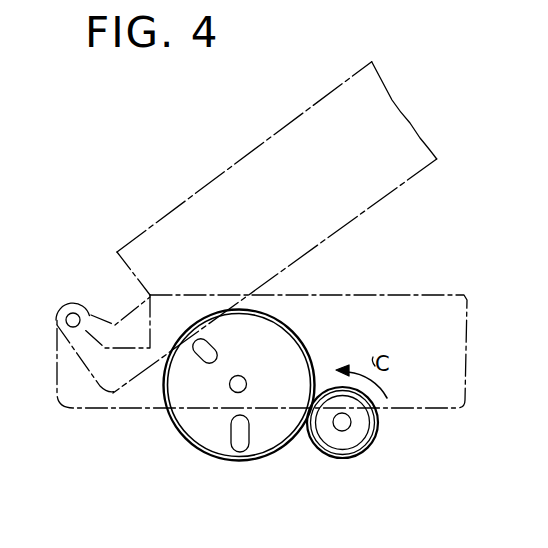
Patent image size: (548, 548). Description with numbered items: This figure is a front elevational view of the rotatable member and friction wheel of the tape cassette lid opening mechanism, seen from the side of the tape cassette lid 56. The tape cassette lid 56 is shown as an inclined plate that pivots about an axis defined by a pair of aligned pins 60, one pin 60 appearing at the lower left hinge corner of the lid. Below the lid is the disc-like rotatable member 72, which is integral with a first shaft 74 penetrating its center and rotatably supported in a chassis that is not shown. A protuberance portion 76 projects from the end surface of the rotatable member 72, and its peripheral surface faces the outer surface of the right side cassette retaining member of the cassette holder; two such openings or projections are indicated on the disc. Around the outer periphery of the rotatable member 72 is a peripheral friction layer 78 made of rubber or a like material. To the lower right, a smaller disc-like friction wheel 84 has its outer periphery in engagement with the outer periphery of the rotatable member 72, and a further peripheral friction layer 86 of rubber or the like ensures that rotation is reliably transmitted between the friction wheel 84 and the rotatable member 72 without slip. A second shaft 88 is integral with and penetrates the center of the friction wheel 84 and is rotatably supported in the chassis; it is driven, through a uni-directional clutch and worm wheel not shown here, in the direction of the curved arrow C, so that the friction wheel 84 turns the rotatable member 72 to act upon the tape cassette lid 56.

The tape cassette lid 56 is at (403, 133).
The pin 60 is at (57, 313).
The rotatable member 72 is at (321, 361).
The first shaft 74 is at (260, 380).
The protuberance portion 76 is at (214, 348).
The peripheral friction layer 78 is at (288, 327).
The friction wheel 84 is at (379, 437).
The peripheral friction layer 86 is at (368, 450).
The second shaft 88 is at (342, 431).